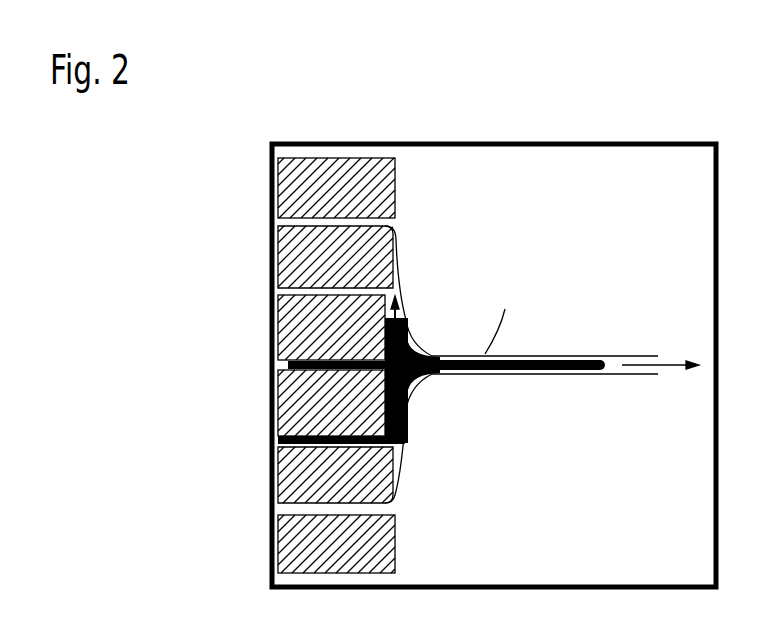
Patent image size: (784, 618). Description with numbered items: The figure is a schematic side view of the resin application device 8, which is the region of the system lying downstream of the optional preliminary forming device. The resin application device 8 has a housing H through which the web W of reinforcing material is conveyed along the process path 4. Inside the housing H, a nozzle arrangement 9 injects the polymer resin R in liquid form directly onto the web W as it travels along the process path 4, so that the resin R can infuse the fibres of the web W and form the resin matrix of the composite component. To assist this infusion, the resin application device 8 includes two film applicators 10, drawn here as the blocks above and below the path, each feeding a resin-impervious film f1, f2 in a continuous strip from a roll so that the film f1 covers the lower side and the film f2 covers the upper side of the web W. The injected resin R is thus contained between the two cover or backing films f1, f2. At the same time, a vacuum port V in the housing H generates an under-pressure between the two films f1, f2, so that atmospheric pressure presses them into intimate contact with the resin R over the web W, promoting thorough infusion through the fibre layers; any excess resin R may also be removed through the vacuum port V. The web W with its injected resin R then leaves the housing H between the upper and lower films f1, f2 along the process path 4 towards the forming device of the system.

The resin application device 8 is at (212, 155).
The film applicators 10 is at (398, 187).
The nozzle arrangement 9 is at (403, 437).
The process path 4 is at (671, 370).
The housing H is at (295, 325).
The web of reinforcing material W is at (273, 365).
The polymer resin R is at (273, 440).
The vacuum port V is at (167, 291).
The film f1 is at (273, 509).
The film f2 is at (273, 223).